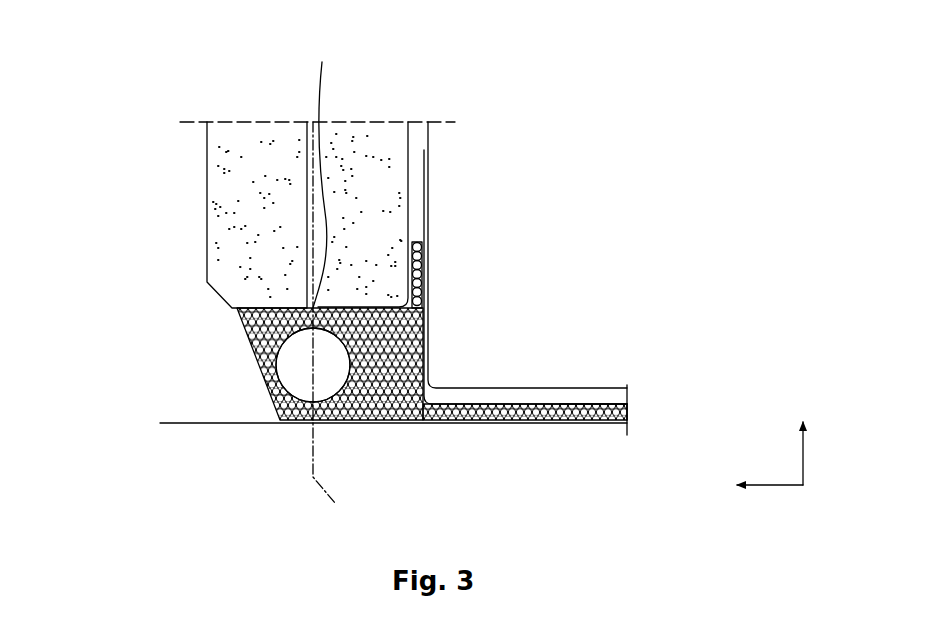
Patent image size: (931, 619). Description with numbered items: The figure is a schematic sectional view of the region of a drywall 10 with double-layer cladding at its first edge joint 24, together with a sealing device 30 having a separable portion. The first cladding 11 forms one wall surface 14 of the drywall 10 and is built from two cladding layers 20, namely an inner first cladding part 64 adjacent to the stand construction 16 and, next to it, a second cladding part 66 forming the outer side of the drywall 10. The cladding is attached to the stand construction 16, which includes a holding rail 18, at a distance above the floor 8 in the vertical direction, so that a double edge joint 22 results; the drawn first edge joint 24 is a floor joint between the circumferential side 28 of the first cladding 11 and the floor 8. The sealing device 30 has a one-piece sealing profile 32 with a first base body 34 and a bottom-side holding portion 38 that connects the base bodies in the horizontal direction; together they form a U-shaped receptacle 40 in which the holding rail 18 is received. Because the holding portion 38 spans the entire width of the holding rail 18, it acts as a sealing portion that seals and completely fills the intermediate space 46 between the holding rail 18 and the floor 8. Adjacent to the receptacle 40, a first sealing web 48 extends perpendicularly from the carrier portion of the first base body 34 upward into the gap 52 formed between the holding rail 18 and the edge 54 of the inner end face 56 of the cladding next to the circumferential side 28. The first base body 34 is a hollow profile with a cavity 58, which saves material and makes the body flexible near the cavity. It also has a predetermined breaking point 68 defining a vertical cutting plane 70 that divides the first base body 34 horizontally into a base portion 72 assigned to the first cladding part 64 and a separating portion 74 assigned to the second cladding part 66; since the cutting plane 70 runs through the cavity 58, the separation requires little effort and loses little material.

The drywall 10 is at (97, 104).
The floor 8 is at (528, 489).
The first cladding 11 is at (260, 181).
The wall surface 14 is at (190, 176).
The electrical connection element 20 is at (310, 181).
The second cladding part 66 is at (243, 135).
The first cladding part 64 is at (363, 137).
The predetermined breaking point 68 is at (336, 181).
The double edge joint 22 is at (368, 412).
The first edge joint 24 is at (235, 376).
The circumferential side 28 is at (247, 320).
The sealing device 30 is at (516, 465).
The sealing profile 32 is at (480, 432).
The first base body 34 is at (377, 412).
The separating portion 74 is at (285, 376).
The base portion 72 is at (373, 388).
The cavity 58 is at (282, 410).
The cutting plane 70 is at (340, 324).
The holding portion 38 is at (570, 416).
The gap 52 is at (415, 215).
The inner end face 56 is at (410, 177).
The first sealing web 48 is at (423, 250).
The edge 54 is at (420, 275).
The receptacle 40 is at (609, 372).
The stand construction 16 is at (622, 372).
The holding rail 18 is at (617, 400).
The intermediate space 46 is at (642, 415).